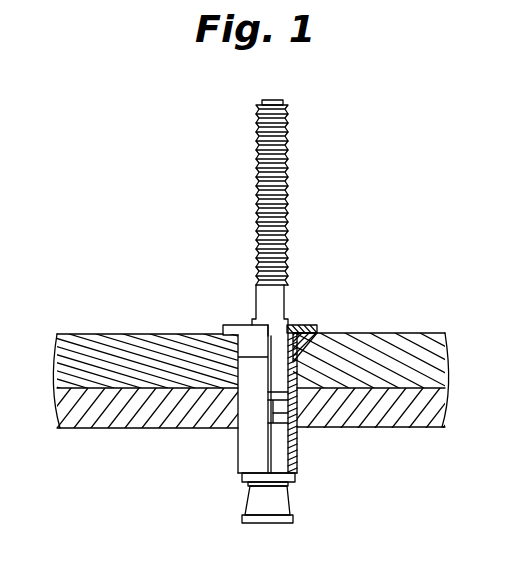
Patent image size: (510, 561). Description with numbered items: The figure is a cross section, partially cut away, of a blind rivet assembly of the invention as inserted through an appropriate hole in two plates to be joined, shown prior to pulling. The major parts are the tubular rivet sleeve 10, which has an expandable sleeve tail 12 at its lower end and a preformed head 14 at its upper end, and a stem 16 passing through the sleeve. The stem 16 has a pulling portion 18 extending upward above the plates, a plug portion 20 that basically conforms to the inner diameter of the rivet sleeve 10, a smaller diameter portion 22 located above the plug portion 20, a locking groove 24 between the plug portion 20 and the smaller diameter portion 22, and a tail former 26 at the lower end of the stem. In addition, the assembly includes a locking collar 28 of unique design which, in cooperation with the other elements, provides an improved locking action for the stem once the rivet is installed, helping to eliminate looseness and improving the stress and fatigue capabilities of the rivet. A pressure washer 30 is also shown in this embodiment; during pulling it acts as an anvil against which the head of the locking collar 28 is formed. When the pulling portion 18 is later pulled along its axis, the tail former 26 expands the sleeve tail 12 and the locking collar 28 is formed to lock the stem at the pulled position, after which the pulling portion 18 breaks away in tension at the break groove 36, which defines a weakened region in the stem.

The tubular rivet sleeve 10 is at (250, 413).
The expandable sleeve tail 12 is at (242, 465).
The preformed head 14 is at (223, 343).
The stem 16 is at (300, 296).
The pulling portion 18 is at (287, 177).
The plug portion 20 is at (282, 458).
The smaller diameter portion 22 is at (293, 362).
The locking groove 24 is at (276, 413).
The tail former 26 is at (282, 507).
The locking collar 28 is at (296, 348).
The pressure washer 30 is at (232, 325).
The break groove 36 is at (278, 393).